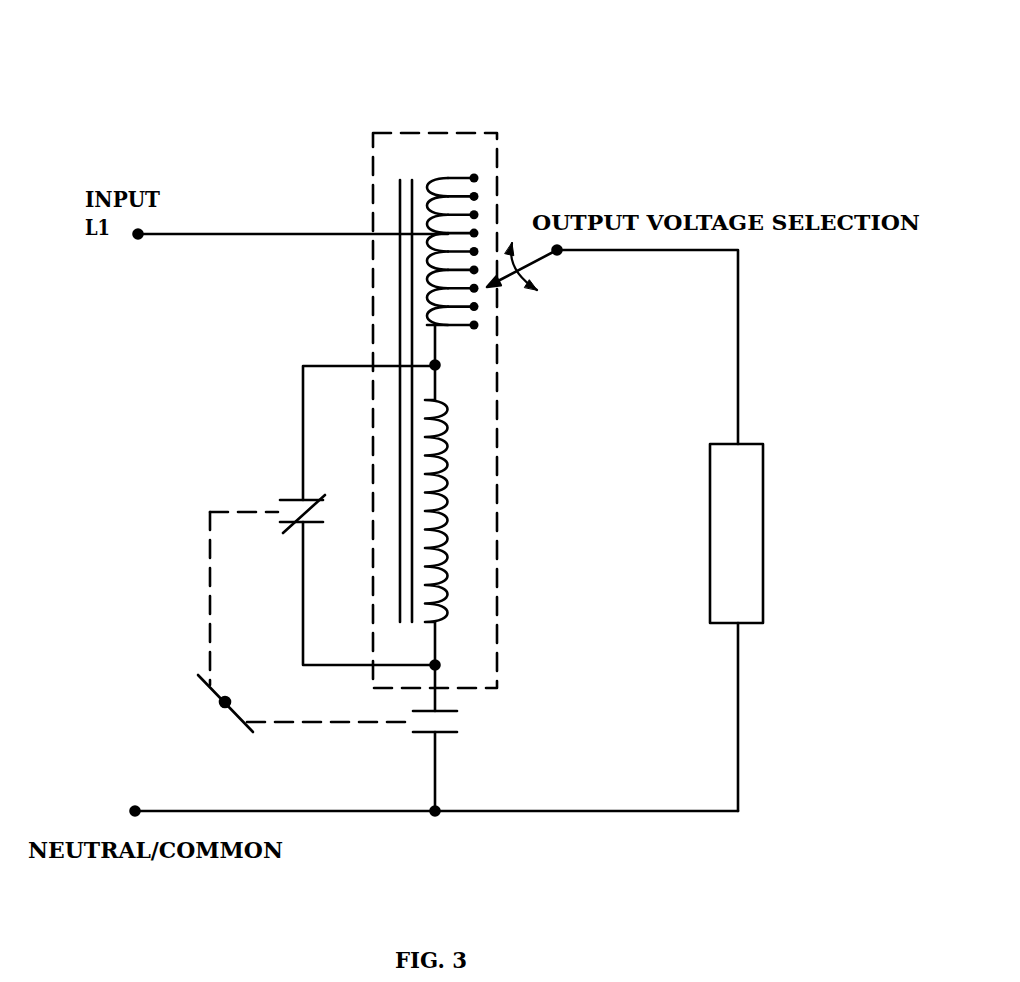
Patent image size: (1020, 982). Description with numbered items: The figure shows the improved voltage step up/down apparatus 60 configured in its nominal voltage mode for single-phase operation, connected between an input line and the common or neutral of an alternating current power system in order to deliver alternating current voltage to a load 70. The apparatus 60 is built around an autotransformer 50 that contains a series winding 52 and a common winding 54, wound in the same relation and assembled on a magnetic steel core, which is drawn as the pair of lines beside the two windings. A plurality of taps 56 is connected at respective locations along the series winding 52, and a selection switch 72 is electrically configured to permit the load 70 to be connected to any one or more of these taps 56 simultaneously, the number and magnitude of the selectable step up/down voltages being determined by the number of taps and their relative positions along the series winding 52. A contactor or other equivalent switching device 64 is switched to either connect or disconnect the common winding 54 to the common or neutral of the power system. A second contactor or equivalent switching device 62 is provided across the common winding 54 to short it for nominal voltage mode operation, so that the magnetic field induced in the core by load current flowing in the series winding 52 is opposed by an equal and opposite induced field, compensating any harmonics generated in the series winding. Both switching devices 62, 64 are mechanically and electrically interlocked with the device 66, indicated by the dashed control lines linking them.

The autotransformer 50 is at (430, 123).
The series winding 52 is at (440, 268).
The common winding 54 is at (455, 510).
The taps 56 is at (477, 333).
The voltage step up/down apparatus 60 is at (532, 158).
The second contactor or equivalent switching device 62 is at (278, 498).
The contactor or equivalent switching device 64 is at (462, 718).
The interlock device 66 is at (218, 697).
The load 70 is at (768, 525).
The selection switch 72 is at (537, 269).